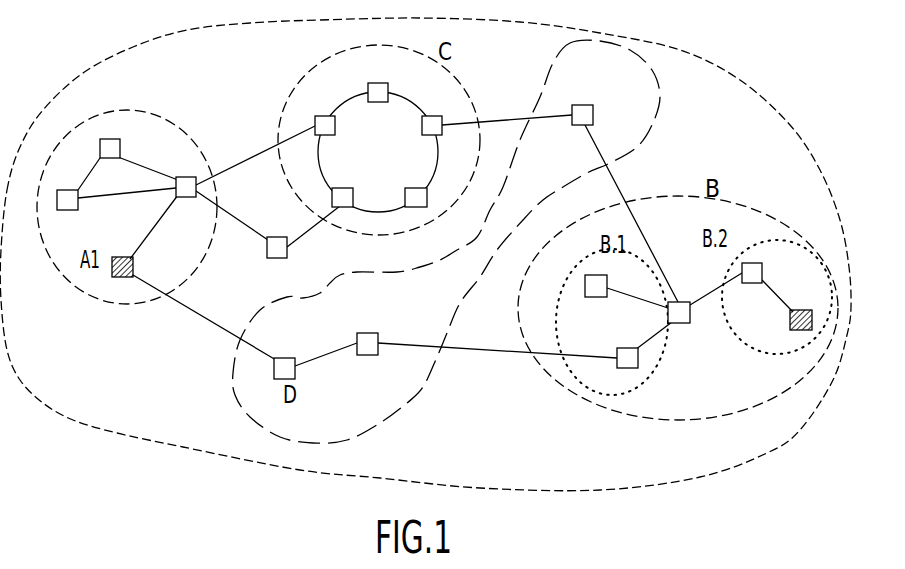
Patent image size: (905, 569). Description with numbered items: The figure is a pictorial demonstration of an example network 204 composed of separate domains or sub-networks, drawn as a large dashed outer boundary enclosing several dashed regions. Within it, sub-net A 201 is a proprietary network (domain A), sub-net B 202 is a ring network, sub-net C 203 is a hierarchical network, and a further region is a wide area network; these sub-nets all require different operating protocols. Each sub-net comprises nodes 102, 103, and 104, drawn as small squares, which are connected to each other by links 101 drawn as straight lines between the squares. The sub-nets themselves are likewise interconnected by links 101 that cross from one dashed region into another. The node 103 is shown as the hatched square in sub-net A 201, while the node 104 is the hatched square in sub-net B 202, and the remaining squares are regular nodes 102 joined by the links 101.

The links 101 is at (487, 353).
The nodes 102 is at (371, 392).
The node 103 is at (119, 279).
The node 104 is at (801, 331).
The sub-net A 201 is at (127, 195).
The sub-net B 202 is at (746, 205).
The sub-net C 203 is at (303, 77).
The network 204 is at (98, 425).